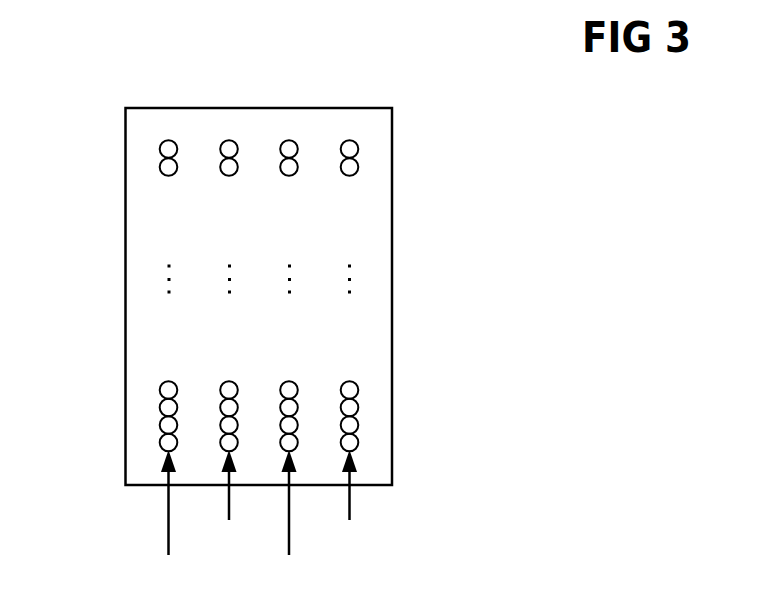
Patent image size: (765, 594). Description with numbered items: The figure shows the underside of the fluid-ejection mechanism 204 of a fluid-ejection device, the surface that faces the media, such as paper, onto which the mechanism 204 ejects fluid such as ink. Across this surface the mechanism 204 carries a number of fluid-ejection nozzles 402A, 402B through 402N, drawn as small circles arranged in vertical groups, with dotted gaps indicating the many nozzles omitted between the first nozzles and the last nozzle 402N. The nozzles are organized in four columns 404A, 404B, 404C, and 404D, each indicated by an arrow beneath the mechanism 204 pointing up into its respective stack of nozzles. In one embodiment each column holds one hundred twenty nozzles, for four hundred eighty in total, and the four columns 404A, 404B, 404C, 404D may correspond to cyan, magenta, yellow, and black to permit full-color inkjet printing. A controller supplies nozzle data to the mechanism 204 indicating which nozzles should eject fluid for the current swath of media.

The fluid-ejection mechanism 204 is at (125, 243).
The fluid-ejection nozzle 402N is at (357, 149).
The fluid-ejection nozzle 402B is at (160, 427).
The fluid-ejection nozzle 402A is at (160, 447).
The column 404A is at (167, 516).
The column 404B is at (228, 499).
The column 404C is at (287, 516).
The column 404D is at (349, 499).